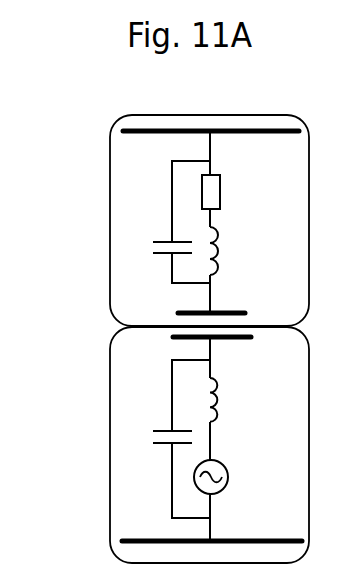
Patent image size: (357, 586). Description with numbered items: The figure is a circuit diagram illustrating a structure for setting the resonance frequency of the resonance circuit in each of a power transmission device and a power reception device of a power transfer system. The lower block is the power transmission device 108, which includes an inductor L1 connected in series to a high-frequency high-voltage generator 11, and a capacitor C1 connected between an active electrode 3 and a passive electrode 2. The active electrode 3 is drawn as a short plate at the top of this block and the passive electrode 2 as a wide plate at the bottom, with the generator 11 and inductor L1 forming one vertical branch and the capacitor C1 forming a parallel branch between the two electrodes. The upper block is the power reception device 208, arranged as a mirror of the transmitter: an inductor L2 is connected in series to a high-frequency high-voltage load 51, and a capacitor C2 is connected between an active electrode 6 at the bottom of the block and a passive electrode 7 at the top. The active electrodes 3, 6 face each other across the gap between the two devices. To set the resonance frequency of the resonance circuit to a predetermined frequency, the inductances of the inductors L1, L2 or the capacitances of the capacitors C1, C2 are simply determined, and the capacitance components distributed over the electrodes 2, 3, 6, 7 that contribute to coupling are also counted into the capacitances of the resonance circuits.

The power reception device 208 is at (110, 218).
The power transmission device 108 is at (110, 432).
The passive electrode 7 is at (267, 134).
The active electrode 6 is at (235, 311).
The active electrode 3 is at (238, 340).
The passive electrode 2 is at (258, 538).
The high-frequency high-voltage load 51 is at (220, 189).
The high-frequency high-voltage generator 11 is at (228, 477).
The capacitor C2 is at (160, 237).
The inductor L2 is at (220, 248).
The capacitor C1 is at (158, 428).
The inductor L1 is at (220, 400).